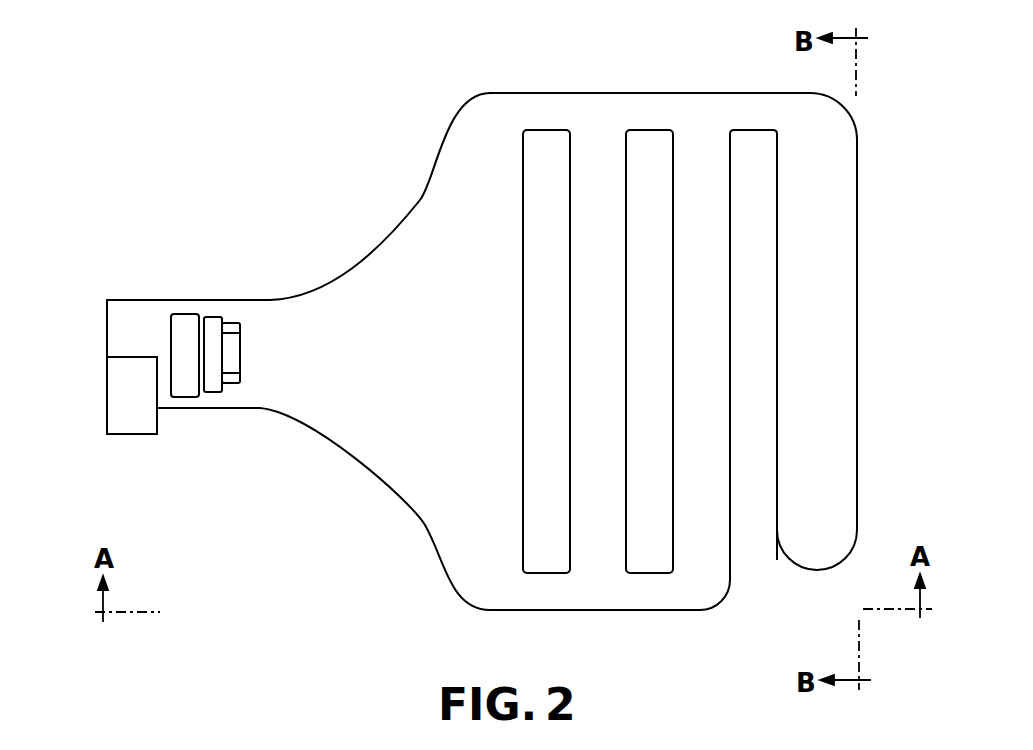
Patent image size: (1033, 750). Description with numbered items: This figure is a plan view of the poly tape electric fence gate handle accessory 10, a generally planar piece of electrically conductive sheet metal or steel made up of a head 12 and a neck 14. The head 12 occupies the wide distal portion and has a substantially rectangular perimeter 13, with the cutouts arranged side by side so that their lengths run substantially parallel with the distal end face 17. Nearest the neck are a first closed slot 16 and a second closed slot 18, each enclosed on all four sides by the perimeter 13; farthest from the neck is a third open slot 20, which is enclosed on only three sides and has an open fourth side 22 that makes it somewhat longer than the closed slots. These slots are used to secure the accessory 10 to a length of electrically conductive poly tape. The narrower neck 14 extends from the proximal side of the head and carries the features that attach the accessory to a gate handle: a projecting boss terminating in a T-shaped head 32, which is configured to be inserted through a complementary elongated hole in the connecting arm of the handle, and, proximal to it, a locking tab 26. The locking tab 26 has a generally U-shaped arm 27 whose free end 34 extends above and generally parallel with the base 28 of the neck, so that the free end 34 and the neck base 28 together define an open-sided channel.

The poly tape accessory 10 is at (380, 118).
The head 12 is at (650, 97).
The perimeter 13 is at (520, 610).
The neck 14 is at (260, 408).
The first closed slot 16 is at (550, 140).
The distal end face 17 is at (858, 322).
The second closed slot 18 is at (650, 571).
The third open slot 20 is at (755, 138).
The open fourth side 22 is at (755, 570).
The locking tab 26 is at (148, 452).
The U-shaped arm 27 is at (107, 420).
The base 28 is at (142, 300).
The T-shaped head 32 is at (211, 397).
The free end 34 is at (107, 380).